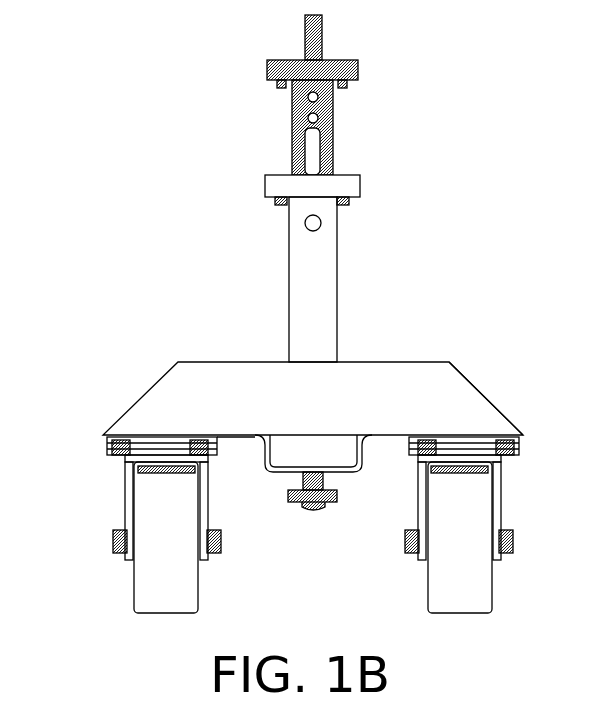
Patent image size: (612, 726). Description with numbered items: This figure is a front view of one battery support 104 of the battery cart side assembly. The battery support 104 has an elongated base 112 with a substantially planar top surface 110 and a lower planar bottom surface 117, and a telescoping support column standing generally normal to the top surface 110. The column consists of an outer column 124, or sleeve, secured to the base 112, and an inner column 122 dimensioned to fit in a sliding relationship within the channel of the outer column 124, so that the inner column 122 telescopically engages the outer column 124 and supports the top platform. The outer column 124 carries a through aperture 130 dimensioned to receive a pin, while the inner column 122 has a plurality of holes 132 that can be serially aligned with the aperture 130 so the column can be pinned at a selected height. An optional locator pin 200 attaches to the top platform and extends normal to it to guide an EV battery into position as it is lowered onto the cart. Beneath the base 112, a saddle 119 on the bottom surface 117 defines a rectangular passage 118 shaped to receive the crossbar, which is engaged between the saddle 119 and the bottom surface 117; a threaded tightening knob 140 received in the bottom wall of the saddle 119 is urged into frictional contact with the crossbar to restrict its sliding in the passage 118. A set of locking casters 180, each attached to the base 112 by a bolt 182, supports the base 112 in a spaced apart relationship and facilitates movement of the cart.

The battery support 104 is at (110, 203).
The locator pin 200 is at (292, 170).
The inner column 122 is at (292, 112).
The holes 132 is at (333, 88).
The outer column 124 is at (289, 265).
The through aperture 130 is at (321, 223).
The top surface 110 is at (402, 360).
The elongated base 112 is at (447, 393).
The bolt 182 is at (110, 448).
The locking caster 180 is at (132, 577).
The passage 118 is at (297, 452).
The bottom surface 117 is at (387, 440).
The saddle 119 is at (280, 474).
The tightening knob 140 is at (316, 512).